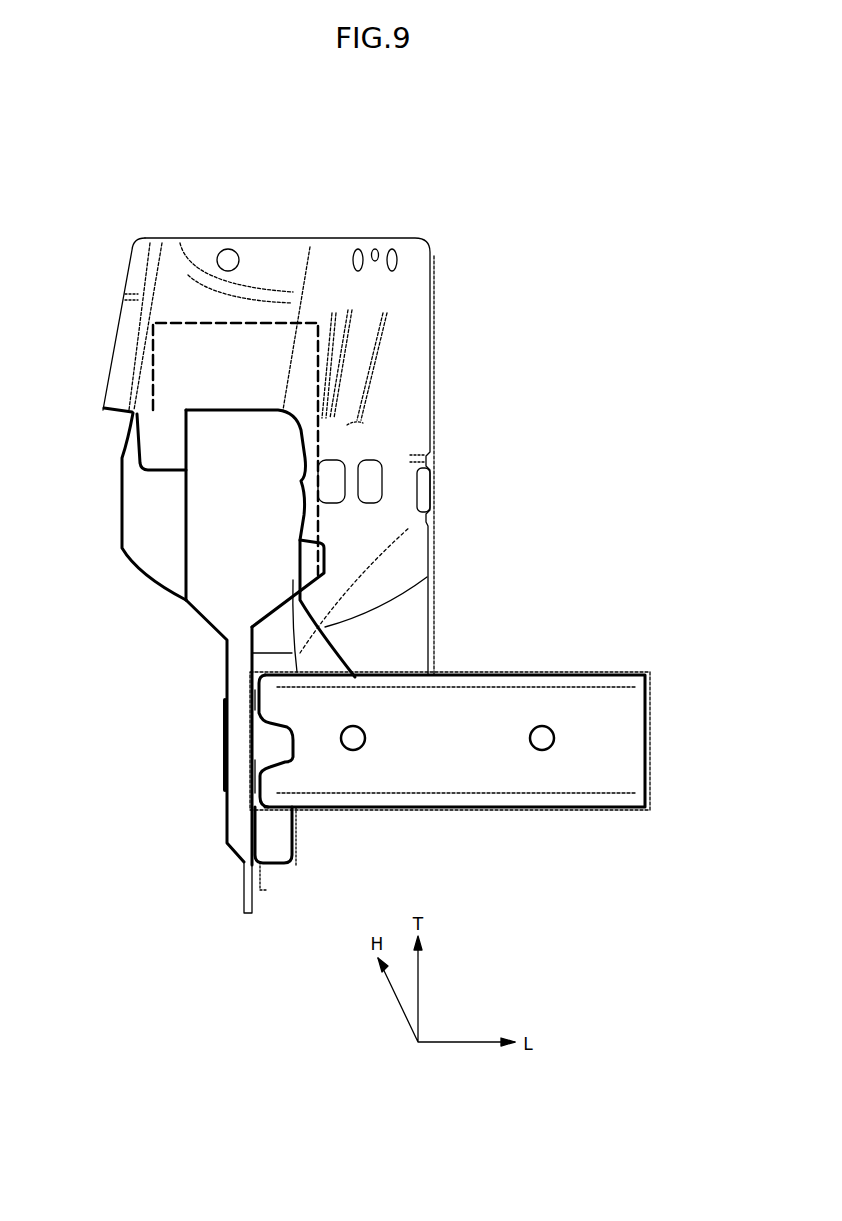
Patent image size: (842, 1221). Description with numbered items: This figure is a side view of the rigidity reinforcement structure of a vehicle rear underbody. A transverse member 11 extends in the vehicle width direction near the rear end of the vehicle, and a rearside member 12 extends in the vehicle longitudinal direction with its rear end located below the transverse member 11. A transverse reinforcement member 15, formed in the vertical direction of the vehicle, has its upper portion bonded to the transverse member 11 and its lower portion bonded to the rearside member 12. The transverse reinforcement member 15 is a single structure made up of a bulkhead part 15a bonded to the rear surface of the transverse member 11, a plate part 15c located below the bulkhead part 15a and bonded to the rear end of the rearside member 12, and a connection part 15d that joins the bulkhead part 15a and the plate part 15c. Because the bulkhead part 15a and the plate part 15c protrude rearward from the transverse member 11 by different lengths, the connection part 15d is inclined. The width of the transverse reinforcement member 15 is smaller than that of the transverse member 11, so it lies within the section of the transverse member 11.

The transverse member 11 is at (405, 328).
The rearside member 12 is at (570, 783).
The transverse reinforcement member 15 is at (197, 660).
The bulkhead part 15a is at (200, 497).
The plate part 15c is at (245, 752).
The connection part 15d is at (207, 632).